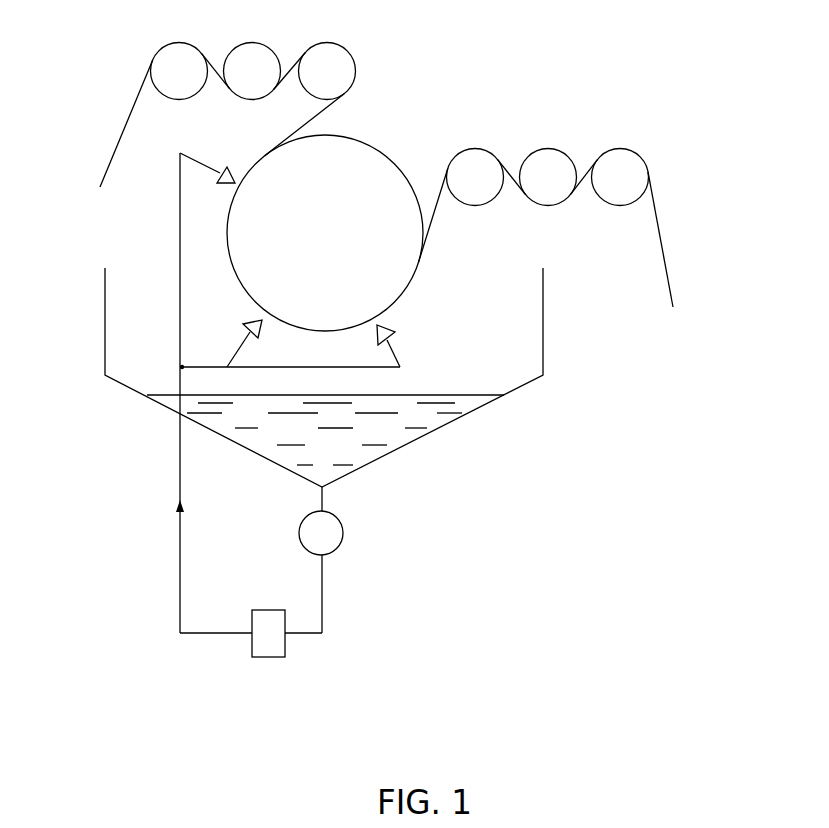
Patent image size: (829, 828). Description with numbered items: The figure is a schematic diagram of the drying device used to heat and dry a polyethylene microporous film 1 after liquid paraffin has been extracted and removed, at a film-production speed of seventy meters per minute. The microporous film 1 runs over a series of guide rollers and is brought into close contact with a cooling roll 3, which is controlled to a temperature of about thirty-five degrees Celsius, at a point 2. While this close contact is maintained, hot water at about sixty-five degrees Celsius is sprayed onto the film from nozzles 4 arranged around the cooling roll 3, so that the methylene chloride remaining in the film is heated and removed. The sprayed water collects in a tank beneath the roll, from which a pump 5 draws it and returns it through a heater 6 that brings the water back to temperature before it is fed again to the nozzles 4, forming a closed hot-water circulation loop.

The microporous film 1 is at (104, 141).
The position at which film is brought into close contact with cooling roll 2 is at (256, 146).
The cooling roll 3 is at (333, 244).
The nozzles 4 is at (223, 190).
The pump 5 is at (345, 532).
The heater 6 is at (267, 657).